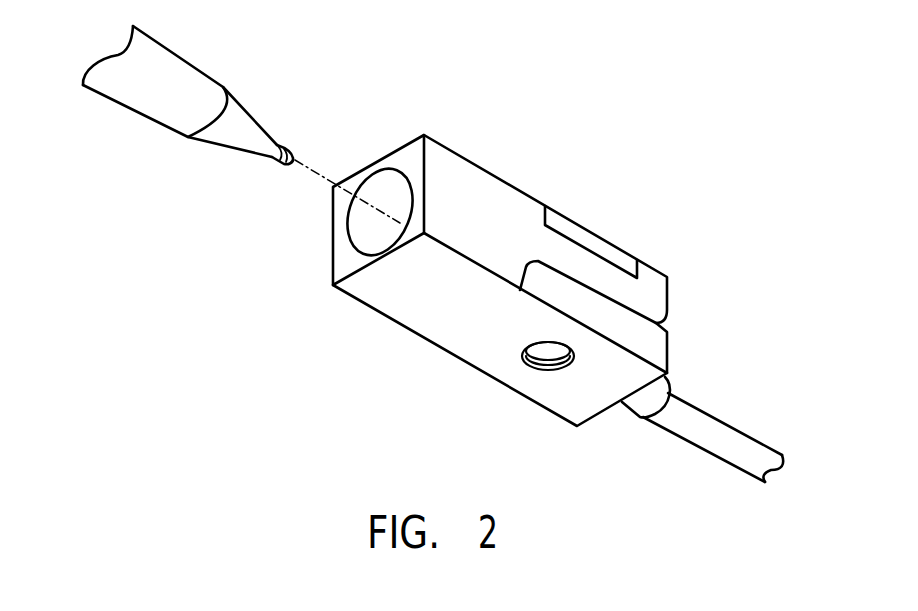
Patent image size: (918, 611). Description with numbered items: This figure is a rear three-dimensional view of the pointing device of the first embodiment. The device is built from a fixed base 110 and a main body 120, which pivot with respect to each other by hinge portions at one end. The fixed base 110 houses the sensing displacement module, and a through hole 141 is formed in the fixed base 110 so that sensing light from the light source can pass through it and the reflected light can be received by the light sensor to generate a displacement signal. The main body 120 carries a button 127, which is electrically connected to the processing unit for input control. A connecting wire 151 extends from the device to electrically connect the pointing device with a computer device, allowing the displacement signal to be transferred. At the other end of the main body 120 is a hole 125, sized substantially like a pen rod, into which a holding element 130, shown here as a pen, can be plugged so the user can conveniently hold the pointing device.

The fixed base 110 is at (500, 346).
The main body 120 is at (433, 206).
The hole 125 is at (366, 233).
The button 127 is at (597, 245).
The holding element 130 is at (127, 107).
The through hole 141 is at (552, 356).
The connecting wire 151 is at (723, 438).